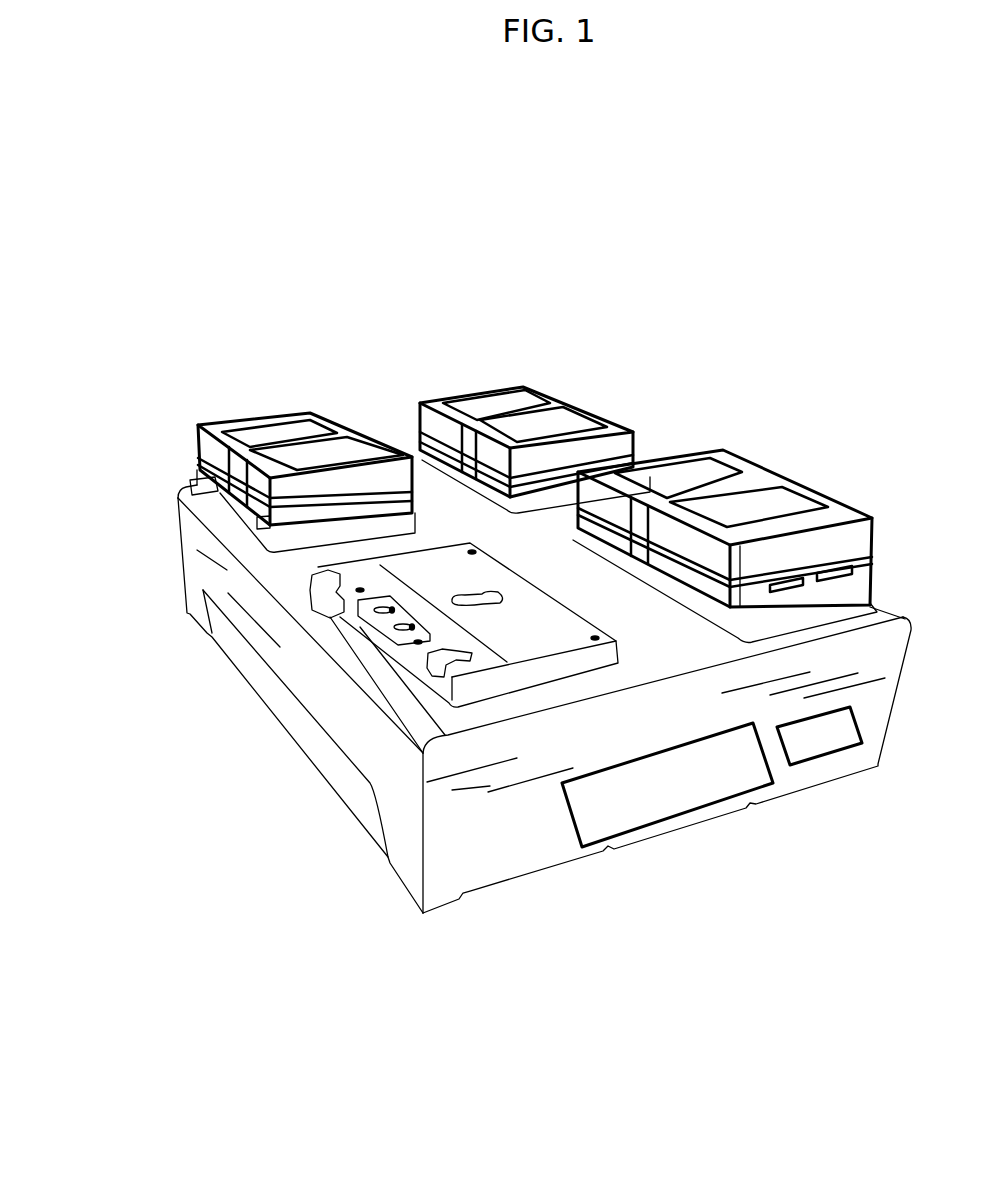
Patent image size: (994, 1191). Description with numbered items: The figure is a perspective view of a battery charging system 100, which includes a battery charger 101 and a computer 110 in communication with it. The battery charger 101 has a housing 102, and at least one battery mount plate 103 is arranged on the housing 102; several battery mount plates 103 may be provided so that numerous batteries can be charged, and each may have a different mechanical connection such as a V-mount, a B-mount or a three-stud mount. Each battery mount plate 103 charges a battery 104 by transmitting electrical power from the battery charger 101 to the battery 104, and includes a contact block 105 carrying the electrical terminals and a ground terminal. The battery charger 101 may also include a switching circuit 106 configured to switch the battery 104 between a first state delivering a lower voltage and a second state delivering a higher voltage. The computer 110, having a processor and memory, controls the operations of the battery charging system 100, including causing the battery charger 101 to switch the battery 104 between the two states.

The battery charging system 100 is at (212, 266).
The battery charger 101 is at (145, 501).
The housing 102 is at (195, 602).
The battery mount plate 103 is at (484, 690).
The battery 104 is at (782, 472).
The contact block 105 is at (375, 633).
The switching circuit 106 is at (852, 752).
The computer 110 is at (677, 792).